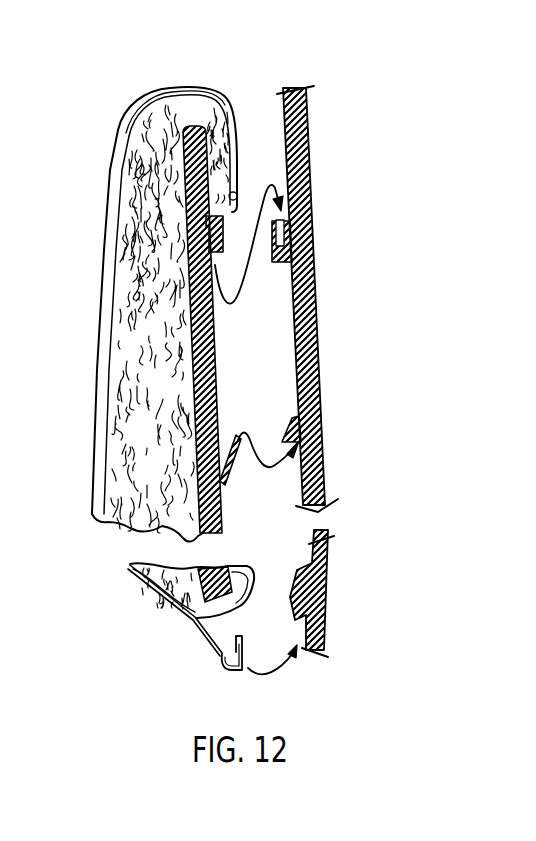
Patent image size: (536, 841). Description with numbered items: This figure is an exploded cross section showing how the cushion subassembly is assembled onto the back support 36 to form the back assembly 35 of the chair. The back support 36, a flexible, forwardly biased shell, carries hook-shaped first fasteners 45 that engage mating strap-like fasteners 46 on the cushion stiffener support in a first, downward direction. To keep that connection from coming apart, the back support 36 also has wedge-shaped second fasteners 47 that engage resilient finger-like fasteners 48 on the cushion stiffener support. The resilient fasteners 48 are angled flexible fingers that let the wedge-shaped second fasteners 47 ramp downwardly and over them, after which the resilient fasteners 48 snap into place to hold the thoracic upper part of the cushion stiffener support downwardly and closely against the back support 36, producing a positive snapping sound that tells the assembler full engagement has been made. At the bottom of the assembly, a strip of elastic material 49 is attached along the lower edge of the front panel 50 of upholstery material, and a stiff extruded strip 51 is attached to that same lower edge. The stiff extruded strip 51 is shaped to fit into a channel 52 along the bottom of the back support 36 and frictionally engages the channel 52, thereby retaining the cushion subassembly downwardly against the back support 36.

The back assembly 35 is at (117, 90).
The back support 36 is at (320, 293).
The hook-shaped first fasteners 45 is at (272, 252).
The strap-like fasteners 46 is at (221, 231).
The wedge-shaped second fasteners 47 is at (292, 422).
The resilient finger-like fasteners 48 is at (240, 460).
The strip of elastic material 49 is at (192, 630).
The front panel 50 is at (140, 589).
The stiff extruded strip 51 is at (218, 650).
The channel 52 is at (297, 623).